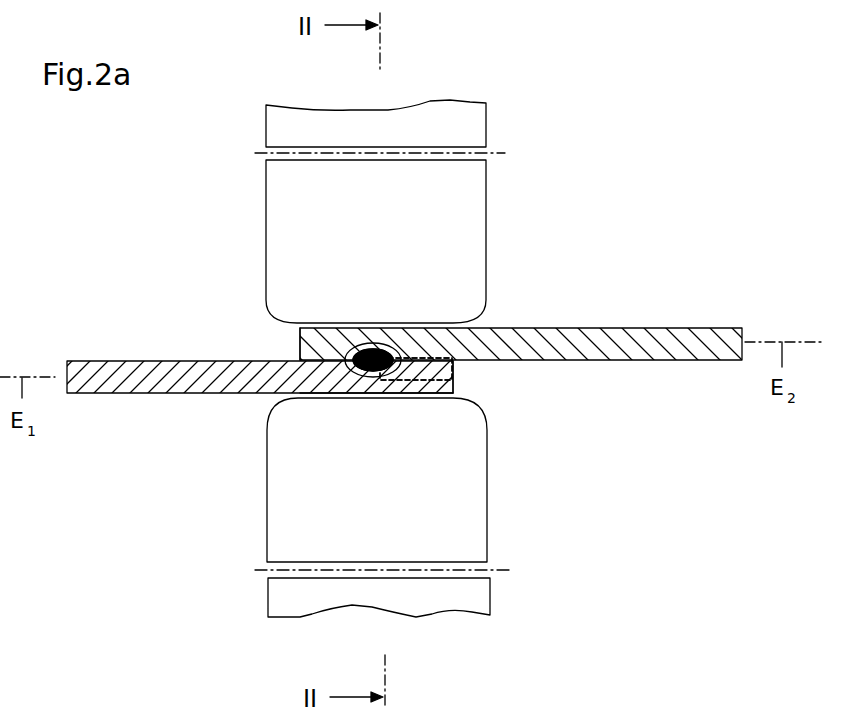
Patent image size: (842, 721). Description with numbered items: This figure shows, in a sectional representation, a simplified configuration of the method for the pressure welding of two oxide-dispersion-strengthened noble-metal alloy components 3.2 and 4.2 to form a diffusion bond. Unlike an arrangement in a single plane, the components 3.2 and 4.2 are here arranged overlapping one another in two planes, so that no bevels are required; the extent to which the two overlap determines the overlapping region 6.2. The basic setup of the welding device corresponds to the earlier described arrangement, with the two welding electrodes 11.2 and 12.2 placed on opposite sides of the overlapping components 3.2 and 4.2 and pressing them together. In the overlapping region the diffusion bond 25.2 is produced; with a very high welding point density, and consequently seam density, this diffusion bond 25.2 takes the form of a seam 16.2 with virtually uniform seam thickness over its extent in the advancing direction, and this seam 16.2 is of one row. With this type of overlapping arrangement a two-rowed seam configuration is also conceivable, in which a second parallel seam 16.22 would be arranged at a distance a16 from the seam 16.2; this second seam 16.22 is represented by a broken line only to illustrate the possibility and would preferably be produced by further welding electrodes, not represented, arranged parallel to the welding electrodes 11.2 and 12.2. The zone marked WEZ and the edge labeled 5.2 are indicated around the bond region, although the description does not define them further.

The welding electrode 12.2 is at (297, 210).
The welding electrode 11.2 is at (285, 598).
The oxide-dispersion-strengthened noble-metal alloy component 4.2 is at (697, 347).
The oxide-dispersion-strengthened noble-metal alloy component 3.2 is at (107, 393).
The strip edge 5.2 is at (358, 340).
The overlapping region 6.2 is at (318, 394).
The diffusion bond 25.2 is at (400, 346).
The seam 16.2 is at (400, 346).
The second parallel seam 16.22 is at (452, 364).
The distance a16 is at (412, 378).
The heat affected zone WEZ is at (387, 335).